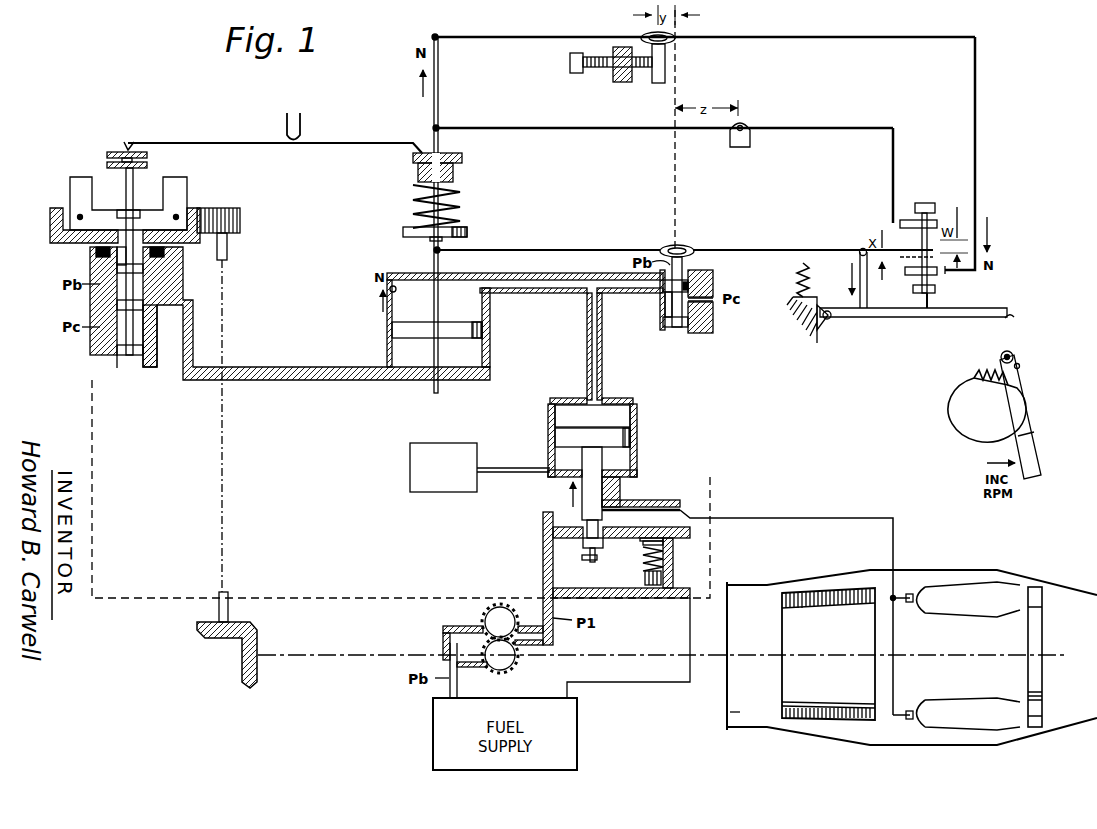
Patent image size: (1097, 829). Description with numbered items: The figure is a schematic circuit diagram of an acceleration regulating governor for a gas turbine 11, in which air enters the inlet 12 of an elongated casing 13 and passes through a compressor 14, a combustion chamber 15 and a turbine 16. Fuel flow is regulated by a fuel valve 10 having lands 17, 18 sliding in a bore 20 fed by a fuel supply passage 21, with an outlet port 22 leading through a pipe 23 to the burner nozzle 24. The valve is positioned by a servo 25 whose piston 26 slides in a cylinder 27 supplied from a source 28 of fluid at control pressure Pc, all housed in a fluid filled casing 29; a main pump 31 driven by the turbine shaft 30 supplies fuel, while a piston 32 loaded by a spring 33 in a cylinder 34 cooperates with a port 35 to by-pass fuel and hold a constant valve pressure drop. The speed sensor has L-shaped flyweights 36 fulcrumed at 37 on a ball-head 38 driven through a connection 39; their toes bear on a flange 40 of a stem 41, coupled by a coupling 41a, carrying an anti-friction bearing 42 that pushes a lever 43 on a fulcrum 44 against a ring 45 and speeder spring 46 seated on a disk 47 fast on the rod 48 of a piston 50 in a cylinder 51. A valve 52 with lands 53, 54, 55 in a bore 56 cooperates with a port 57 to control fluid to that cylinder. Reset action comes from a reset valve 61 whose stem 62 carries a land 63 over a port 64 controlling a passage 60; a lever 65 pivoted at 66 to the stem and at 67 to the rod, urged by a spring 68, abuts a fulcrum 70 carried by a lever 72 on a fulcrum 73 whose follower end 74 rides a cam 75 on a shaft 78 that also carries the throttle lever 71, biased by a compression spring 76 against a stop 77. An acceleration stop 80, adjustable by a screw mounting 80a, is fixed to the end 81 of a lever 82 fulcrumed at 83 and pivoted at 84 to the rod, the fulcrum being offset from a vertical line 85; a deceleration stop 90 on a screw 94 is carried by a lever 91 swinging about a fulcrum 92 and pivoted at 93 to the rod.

The fuel valve 10 is at (627, 498).
The gas turbine 11 is at (880, 750).
The inlet 12 is at (730, 713).
The casing 13 is at (928, 750).
The compressor 14 is at (790, 629).
The combustion chamber 15 is at (975, 583).
The turbine 16 is at (1042, 592).
The land 17 is at (575, 512).
The land 18 is at (596, 560).
The bore 20 is at (602, 470).
The fuel supply passage 21 is at (543, 557).
The outlet port 22 is at (603, 545).
The pipe 23 is at (808, 518).
The burner nozzle 24 is at (945, 715).
The servo 25 is at (637, 426).
The piston 26 is at (632, 440).
The cylinder 27 is at (550, 412).
The source of hydraulic fluid 28 is at (420, 495).
The casing 29 is at (345, 608).
The shaft 30 is at (390, 652).
The main pump 31 is at (488, 624).
The piston 32 is at (655, 590).
The spring 33 is at (664, 544).
The cylinder 34 is at (664, 558).
The port 35 is at (663, 580).
The flyweights 36 is at (187, 190).
The fulcrum 37 is at (78, 214).
The ball-head 38 is at (50, 238).
The connection 39 is at (224, 292).
The flange 40 is at (120, 208).
The stem 41 is at (125, 312).
The coupling 41a is at (150, 262).
The anti-friction bearing 42 is at (112, 154).
The lever 43 is at (245, 143).
The fulcrum 44 is at (300, 130).
The ring 45 is at (418, 168).
The speeder spring 46 is at (413, 207).
The disk 47 is at (406, 230).
The rod 48 is at (440, 278).
The piston 50 is at (420, 336).
The cylinder 51 is at (390, 290).
The valve 52 is at (168, 297).
The land 53 is at (117, 268).
The land 54 is at (117, 305).
The land 55 is at (117, 350).
The bore 56 is at (122, 368).
The port 57 is at (160, 318).
The passage 60 is at (540, 282).
The reset valve 61 is at (700, 292).
The stem 62 is at (700, 310).
The land 63 is at (690, 282).
The port 64 is at (665, 297).
The lever 65 is at (762, 249).
The pivot 66 is at (668, 247).
The pivot 67 is at (435, 252).
The spring 68 is at (797, 290).
The fulcrum 70 is at (860, 252).
The throttle lever 71 is at (1030, 430).
The lever 72 is at (880, 312).
The fulcrum 73 is at (830, 320).
The follower 74 is at (1012, 325).
The cam 75 is at (1035, 344).
The compression spring 76 is at (990, 385).
The stop 77 is at (1020, 368).
The shaft 78 is at (1013, 357).
The stop 80 is at (916, 267).
The screw mounting 80a is at (928, 300).
The end 81 is at (950, 272).
The lever 82 is at (780, 37).
The fulcrum 83 is at (668, 48).
The pivot 84 is at (438, 37).
The vertical line 85 is at (673, 180).
The stop 90 is at (918, 248).
The lever 91 is at (840, 128).
The fulcrum 92 is at (748, 126).
The pivot 93 is at (440, 128).
The screw 94 is at (925, 203).